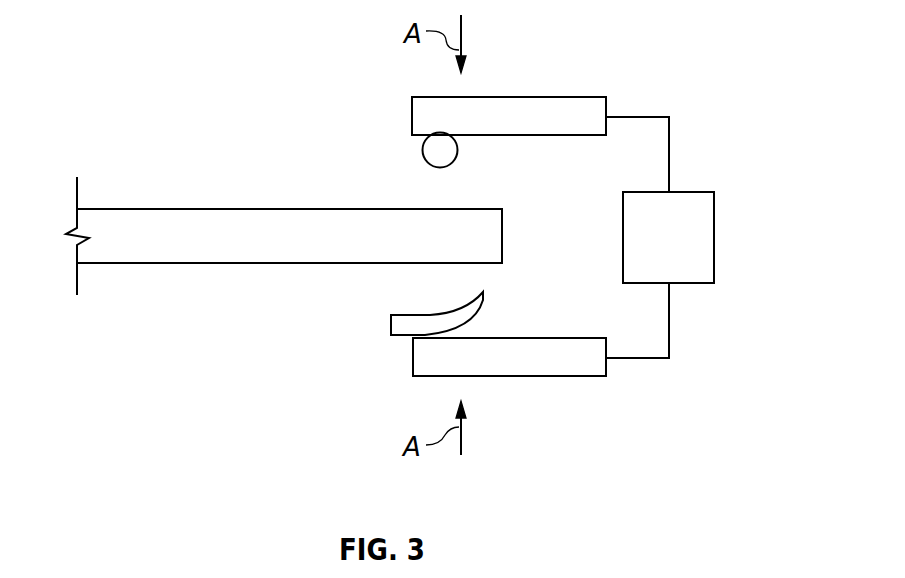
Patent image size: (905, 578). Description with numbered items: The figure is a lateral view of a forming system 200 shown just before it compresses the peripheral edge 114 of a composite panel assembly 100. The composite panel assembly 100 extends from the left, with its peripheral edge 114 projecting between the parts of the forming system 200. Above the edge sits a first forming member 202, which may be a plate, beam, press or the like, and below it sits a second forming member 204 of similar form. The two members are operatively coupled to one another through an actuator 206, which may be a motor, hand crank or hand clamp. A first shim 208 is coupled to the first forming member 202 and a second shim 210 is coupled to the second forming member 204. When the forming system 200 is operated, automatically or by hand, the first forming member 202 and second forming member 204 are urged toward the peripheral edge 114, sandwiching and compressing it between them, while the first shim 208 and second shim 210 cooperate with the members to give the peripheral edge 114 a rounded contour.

The composite panel assembly 100 is at (137, 181).
The peripheral edge 114 is at (458, 209).
The forming system 200 is at (634, 62).
The first forming member 202 is at (491, 97).
The second forming member 204 is at (557, 377).
The actuator 206 is at (714, 230).
The first shim 208 is at (421, 147).
The second shim 210 is at (428, 314).